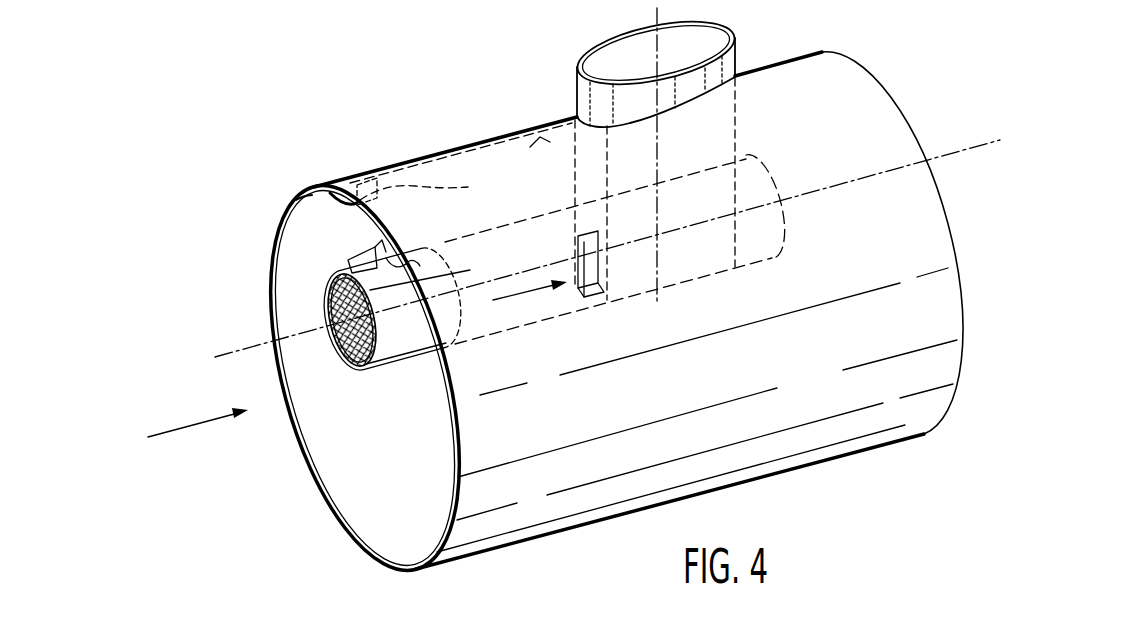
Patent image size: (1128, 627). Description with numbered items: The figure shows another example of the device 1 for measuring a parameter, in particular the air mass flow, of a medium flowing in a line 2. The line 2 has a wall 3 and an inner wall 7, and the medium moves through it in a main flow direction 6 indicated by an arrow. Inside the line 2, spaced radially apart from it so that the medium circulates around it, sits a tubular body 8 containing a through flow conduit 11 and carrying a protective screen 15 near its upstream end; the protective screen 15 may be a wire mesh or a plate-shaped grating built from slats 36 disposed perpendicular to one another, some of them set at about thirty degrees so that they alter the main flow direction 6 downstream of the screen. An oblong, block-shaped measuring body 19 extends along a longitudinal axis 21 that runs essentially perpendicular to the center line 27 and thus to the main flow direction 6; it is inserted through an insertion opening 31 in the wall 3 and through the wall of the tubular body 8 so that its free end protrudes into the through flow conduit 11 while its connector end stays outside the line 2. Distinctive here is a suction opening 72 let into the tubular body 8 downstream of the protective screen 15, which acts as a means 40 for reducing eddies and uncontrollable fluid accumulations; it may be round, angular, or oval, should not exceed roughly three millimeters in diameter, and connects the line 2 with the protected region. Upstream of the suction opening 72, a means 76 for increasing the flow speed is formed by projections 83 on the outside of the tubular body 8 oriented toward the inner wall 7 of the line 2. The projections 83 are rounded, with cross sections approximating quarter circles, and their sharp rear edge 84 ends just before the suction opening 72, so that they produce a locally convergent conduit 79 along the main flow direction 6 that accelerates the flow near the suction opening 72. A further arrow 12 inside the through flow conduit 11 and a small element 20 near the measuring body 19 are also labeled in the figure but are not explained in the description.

The device 1 is at (886, 466).
The line 2 is at (347, 468).
The wall 3 is at (357, 540).
The main flow direction 6 is at (197, 440).
The inner wall 7 is at (523, 143).
The tubular body 8 is at (388, 367).
The through flow conduit 11 is at (467, 310).
The flow direction 12 is at (528, 293).
The protective screen 15 is at (328, 314).
The measuring body 19 is at (727, 148).
The fastening element 20 is at (587, 260).
The longitudinal axis 21 is at (658, 165).
The center line 27 is at (965, 147).
The insertion opening 31 is at (590, 117).
The slats 36 is at (343, 358).
The means for reducing eddies 40 is at (406, 383).
The suction opening 72 is at (420, 353).
The means for increasing a flow speed 76 is at (255, 218).
The locally convergent conduit 79 is at (312, 217).
The projections 83 is at (358, 173).
The sharp rear edge 84 is at (387, 250).